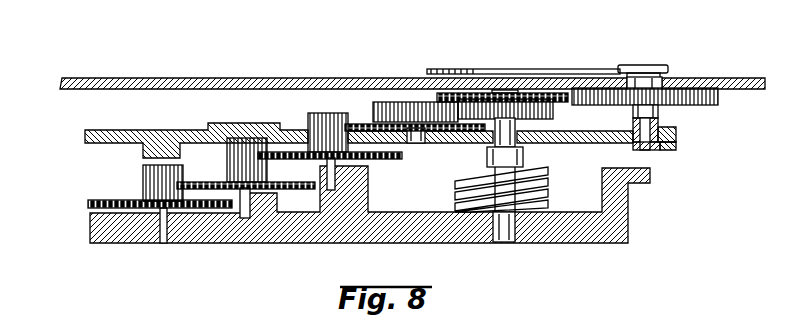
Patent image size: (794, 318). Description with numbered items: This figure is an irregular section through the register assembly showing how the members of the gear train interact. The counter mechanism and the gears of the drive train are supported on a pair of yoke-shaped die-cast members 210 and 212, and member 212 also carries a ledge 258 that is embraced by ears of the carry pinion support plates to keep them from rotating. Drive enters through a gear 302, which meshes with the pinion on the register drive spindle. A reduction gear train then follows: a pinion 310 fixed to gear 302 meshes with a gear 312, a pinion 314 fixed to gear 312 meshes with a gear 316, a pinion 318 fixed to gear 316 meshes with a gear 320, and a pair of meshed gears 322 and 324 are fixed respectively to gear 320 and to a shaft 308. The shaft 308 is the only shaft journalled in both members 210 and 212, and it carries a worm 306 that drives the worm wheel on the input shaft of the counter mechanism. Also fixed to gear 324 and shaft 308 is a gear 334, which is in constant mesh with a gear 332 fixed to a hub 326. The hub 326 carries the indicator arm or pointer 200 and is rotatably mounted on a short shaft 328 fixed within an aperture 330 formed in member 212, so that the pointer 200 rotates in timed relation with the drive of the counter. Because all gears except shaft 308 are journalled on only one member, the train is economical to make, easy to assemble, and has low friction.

The pointer 200 is at (486, 68).
The die-cast member 210 is at (615, 215).
The die-cast member 212 is at (678, 134).
The ledge 258 is at (678, 149).
The gear 302 is at (128, 197).
The worm 306 is at (545, 172).
The shaft 308 is at (512, 236).
The pinion 310 is at (145, 170).
The gear 312 is at (310, 181).
The pinion 314 is at (250, 160).
The gear 316 is at (390, 160).
The pinion 318 is at (345, 112).
The gear 320 is at (492, 142).
The gear 322 is at (412, 100).
The gear 324 is at (553, 117).
The hub 326 is at (659, 111).
The short shaft 328 is at (640, 145).
The aperture 330 is at (645, 125).
The gear 332 is at (722, 97).
The gear 334 is at (545, 92).